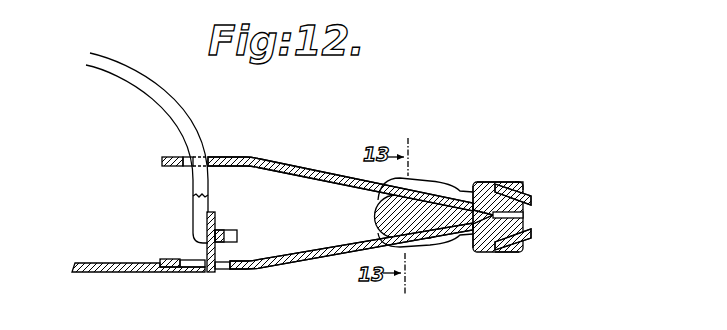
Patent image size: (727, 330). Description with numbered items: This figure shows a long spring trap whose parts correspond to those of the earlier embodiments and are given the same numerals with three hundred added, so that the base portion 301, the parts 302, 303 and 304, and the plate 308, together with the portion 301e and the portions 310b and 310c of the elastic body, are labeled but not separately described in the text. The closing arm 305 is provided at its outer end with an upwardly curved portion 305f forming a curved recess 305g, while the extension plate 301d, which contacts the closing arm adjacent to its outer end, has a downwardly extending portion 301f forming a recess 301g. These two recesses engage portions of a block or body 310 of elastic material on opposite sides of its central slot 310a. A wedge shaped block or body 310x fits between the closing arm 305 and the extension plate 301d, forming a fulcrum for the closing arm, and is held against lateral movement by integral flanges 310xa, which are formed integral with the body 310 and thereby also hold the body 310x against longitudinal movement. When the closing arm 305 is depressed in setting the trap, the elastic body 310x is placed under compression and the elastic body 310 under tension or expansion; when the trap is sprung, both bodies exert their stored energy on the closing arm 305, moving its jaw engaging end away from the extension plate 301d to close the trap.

The bottom wall 301 is at (99, 272).
The extension plate 301d is at (297, 263).
The bottom wall end portion 301e is at (221, 272).
The downwardly extending portion 301f is at (581, 231).
The recess 301g is at (553, 269).
The partition bar 302 is at (215, 213).
The block 303 is at (237, 237).
The curved tube 304 is at (202, 205).
The closing arm 305 is at (317, 168).
The upwardly curved portion 305f is at (578, 195).
The curved recess 305g is at (573, 176).
The top plate 308 is at (220, 155).
The block or body of elastic material 310 is at (518, 183).
The central slot 310a is at (503, 183).
The bore 310b is at (578, 213).
The plug body front portion 310c is at (498, 164).
The wedge shaped block or body 310x is at (377, 213).
The integral flanges 310xa is at (458, 289).